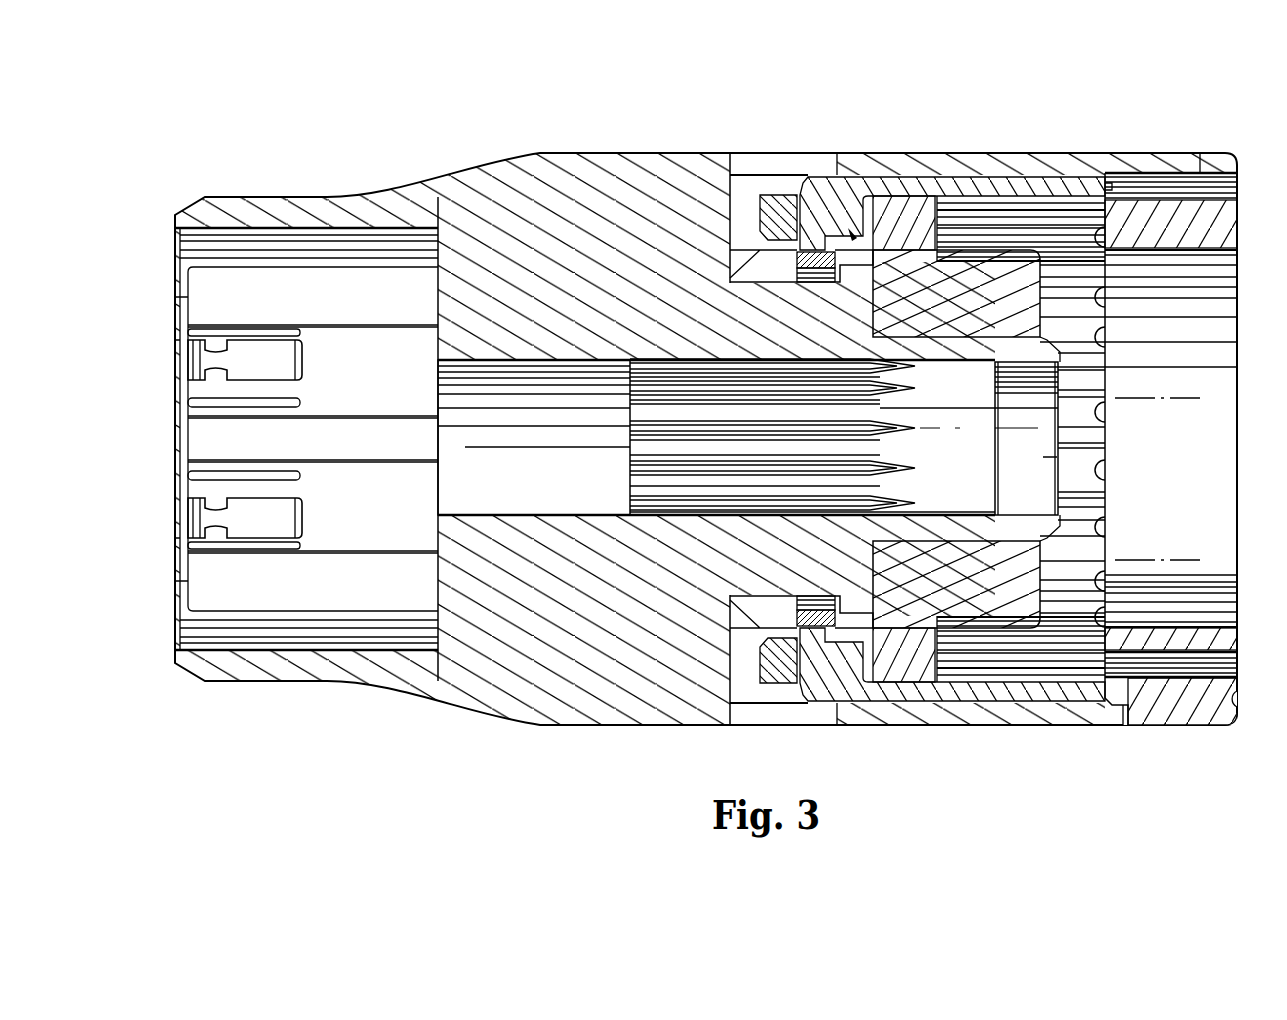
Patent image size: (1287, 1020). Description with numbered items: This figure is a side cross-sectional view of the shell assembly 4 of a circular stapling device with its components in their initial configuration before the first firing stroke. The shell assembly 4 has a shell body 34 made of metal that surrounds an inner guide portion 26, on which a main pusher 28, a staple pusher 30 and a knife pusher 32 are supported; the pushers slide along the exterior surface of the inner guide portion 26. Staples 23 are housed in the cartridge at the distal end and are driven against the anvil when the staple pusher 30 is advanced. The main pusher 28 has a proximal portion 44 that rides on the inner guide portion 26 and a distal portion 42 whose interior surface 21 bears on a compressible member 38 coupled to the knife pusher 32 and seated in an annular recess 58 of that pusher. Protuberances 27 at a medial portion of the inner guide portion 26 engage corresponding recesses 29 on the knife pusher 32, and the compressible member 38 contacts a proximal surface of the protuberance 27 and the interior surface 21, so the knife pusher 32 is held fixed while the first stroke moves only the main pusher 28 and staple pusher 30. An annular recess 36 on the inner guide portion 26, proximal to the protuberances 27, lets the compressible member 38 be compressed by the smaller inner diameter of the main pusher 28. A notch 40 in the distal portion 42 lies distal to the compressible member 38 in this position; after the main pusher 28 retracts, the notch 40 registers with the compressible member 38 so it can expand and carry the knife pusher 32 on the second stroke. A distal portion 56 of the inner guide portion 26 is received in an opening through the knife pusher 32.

The shell assembly 4 is at (1175, 128).
The interior surface 21 is at (795, 246).
The staples 23 is at (1198, 183).
The inner guide portion 26 is at (525, 488).
The protuberances 27 is at (855, 272).
The main pusher 28 is at (333, 562).
The recesses 29 is at (838, 262).
The staple pusher 30 is at (905, 220).
The knife pusher 32 is at (1030, 665).
The shell body 34 is at (525, 232).
The annular recess 36 is at (742, 228).
The compressible member 38 is at (856, 200).
The notch 40 is at (852, 237).
The distal portion 42 is at (766, 218).
The proximal portion 44 is at (187, 300).
The distal portion 56 is at (1045, 455).
The annular recess 58 is at (822, 280).